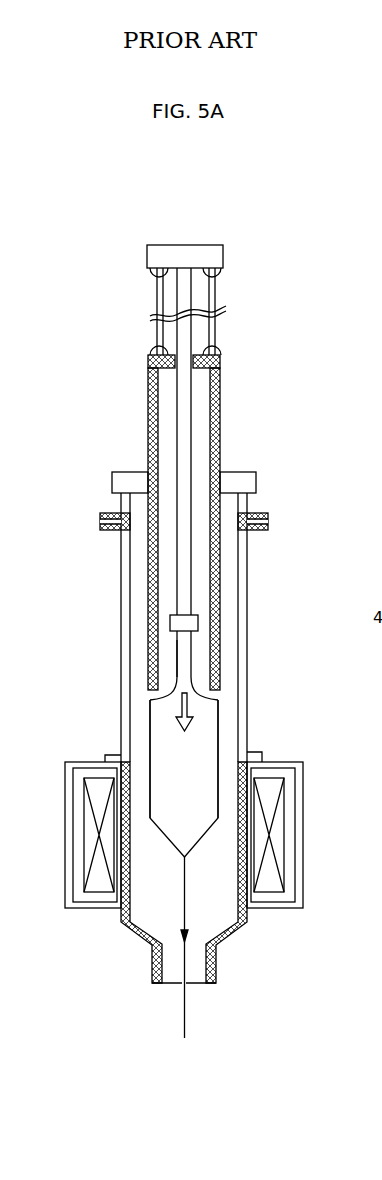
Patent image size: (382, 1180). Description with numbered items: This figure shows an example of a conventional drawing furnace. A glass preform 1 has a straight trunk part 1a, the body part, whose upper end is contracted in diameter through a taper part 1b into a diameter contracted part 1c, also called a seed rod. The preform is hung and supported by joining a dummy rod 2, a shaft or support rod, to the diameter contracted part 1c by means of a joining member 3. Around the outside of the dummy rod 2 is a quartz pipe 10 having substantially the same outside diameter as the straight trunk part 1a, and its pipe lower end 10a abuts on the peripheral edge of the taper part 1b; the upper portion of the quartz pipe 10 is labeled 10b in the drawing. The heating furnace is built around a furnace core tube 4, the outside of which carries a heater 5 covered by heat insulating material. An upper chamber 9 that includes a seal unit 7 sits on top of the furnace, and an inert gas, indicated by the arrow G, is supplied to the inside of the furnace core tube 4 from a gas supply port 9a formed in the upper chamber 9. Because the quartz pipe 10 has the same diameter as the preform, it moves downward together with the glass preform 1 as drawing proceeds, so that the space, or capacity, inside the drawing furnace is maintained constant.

The glass preform 1 is at (203, 778).
The straight trunk part 1a is at (222, 743).
The taper part 1b is at (150, 700).
The diameter contracted part 1c is at (178, 658).
The dummy rod 2 is at (200, 430).
The joining member 3 is at (198, 622).
The furnace core tube 4 is at (120, 813).
The heater 5 is at (274, 835).
The seal unit 7 is at (111, 484).
The upper chamber 9 is at (243, 597).
The gas supply port 9a is at (270, 514).
The quartz pipe 10 is at (220, 553).
The pipe lower end 10a is at (217, 698).
The inner tube cap 10b is at (220, 361).
The gas flow G is at (276, 523).